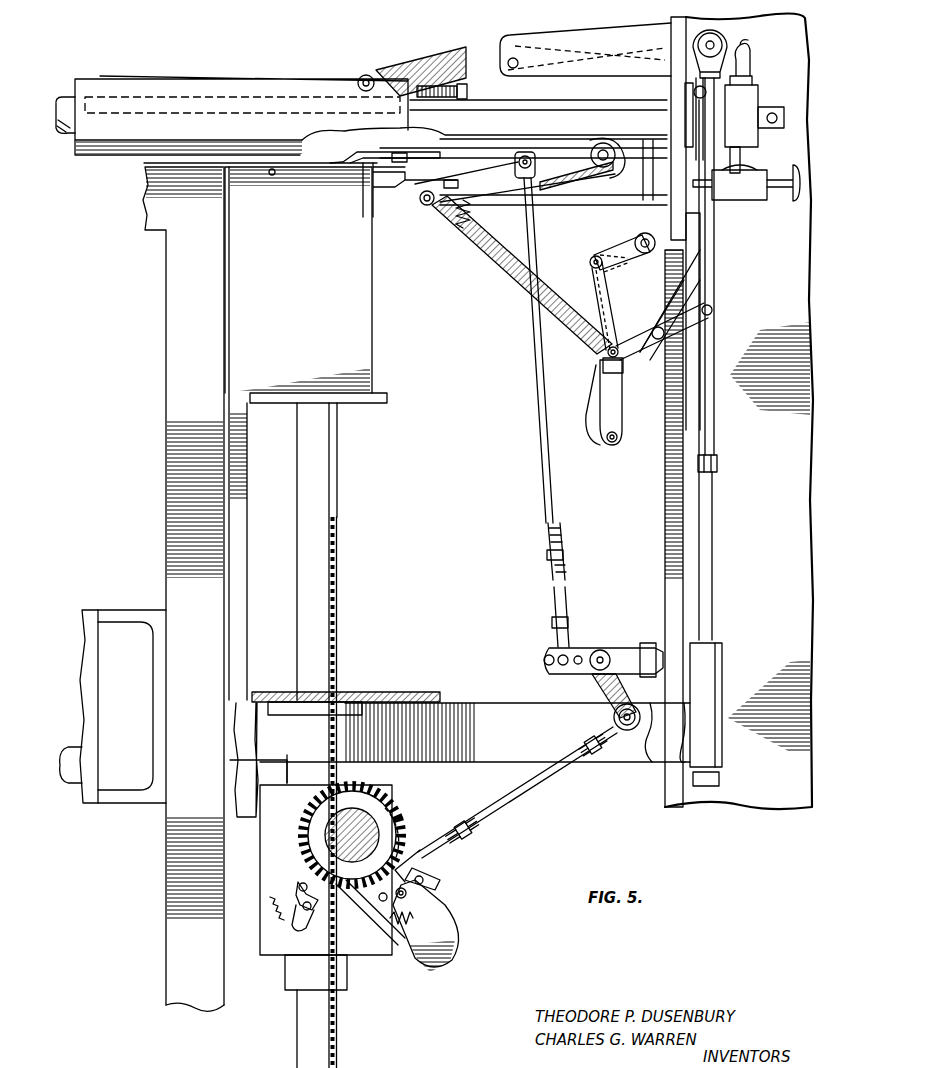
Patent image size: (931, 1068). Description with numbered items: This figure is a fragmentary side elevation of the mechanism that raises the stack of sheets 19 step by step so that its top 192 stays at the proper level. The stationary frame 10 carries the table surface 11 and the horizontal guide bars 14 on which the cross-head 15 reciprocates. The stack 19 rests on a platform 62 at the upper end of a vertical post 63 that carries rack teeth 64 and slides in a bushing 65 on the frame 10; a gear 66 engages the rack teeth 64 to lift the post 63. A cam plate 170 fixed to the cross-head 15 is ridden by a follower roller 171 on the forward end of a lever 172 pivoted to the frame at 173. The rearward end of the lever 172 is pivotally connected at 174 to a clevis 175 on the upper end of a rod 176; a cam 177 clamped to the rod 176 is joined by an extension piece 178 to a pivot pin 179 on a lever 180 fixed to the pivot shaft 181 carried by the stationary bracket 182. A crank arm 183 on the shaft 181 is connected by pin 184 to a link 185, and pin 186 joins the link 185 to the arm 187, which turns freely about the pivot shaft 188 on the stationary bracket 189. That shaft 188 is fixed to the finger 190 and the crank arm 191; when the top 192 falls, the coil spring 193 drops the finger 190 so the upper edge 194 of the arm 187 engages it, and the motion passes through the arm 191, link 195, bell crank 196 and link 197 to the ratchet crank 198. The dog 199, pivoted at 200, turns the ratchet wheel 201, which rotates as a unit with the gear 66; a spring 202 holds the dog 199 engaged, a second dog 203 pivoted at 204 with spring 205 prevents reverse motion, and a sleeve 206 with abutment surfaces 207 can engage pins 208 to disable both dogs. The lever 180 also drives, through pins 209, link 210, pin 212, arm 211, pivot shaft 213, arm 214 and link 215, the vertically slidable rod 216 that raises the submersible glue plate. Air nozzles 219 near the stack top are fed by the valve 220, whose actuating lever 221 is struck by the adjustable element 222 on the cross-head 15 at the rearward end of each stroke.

The stationary frame 10 is at (158, 301).
The table surface 11 is at (148, 163).
The horizontal guide bars 14 is at (63, 96).
The cross-head 15 is at (316, 70).
The stack of sheets 19 is at (373, 315).
The platform 62 is at (375, 399).
The vertical post 63 is at (335, 497).
The rack teeth 64 is at (341, 573).
The bushing 65 is at (350, 708).
The gear 66 is at (385, 808).
The cam plate 170 is at (181, 79).
The follower roller 171 is at (363, 76).
The lever 172 is at (458, 60).
The pivot 173 is at (514, 58).
The pivotal connection 174 is at (724, 45).
The clevis 175 is at (696, 45).
The rod 176 is at (716, 242).
The cam 177 is at (718, 462).
The extension piece 178 is at (718, 347).
The pivot pin 179 is at (714, 310).
The lever 180 is at (666, 352).
The pivot shaft 181 is at (658, 327).
The stationary bracket 182 is at (692, 280).
The crank arm 183 is at (622, 378).
The pin 184 is at (606, 373).
The link 185 is at (497, 278).
The pin 186 is at (422, 205).
The arm 187 is at (503, 185).
The pivot shaft 188 is at (600, 146).
The stationary bracket 189 is at (636, 147).
The finger 190 is at (505, 147).
The crank arm 191 is at (552, 185).
The top of the stack 192 is at (302, 170).
The coil spring 193 is at (458, 222).
The upper edge of the arm 194 is at (451, 180).
The link 195 is at (548, 498).
The bell crank 196 is at (588, 648).
The link 197 is at (553, 768).
The ratchet crank 198 is at (448, 926).
The dog 199 is at (430, 905).
The pivot 200 is at (440, 880).
The ratchet wheel 201 is at (300, 832).
The spring 202 is at (400, 930).
The second dog 203 is at (296, 896).
The pivot 204 is at (312, 922).
The spring 205 is at (272, 919).
The sleeve 206 is at (398, 823).
The abutment surfaces 207 is at (412, 855).
The pins 208 is at (298, 885).
The pins 209 is at (607, 353).
The link 210 is at (605, 292).
The arm 211 is at (612, 250).
The pin 212 is at (590, 263).
The pivot shaft 213 is at (650, 247).
The arm 214 is at (628, 258).
The link 215 is at (594, 438).
The vertically slidable rod 216 is at (610, 182).
The air nozzles 219 is at (273, 168).
The valve 220 is at (752, 100).
The actuating lever 221 is at (694, 100).
The adjustable element 222 is at (470, 93).